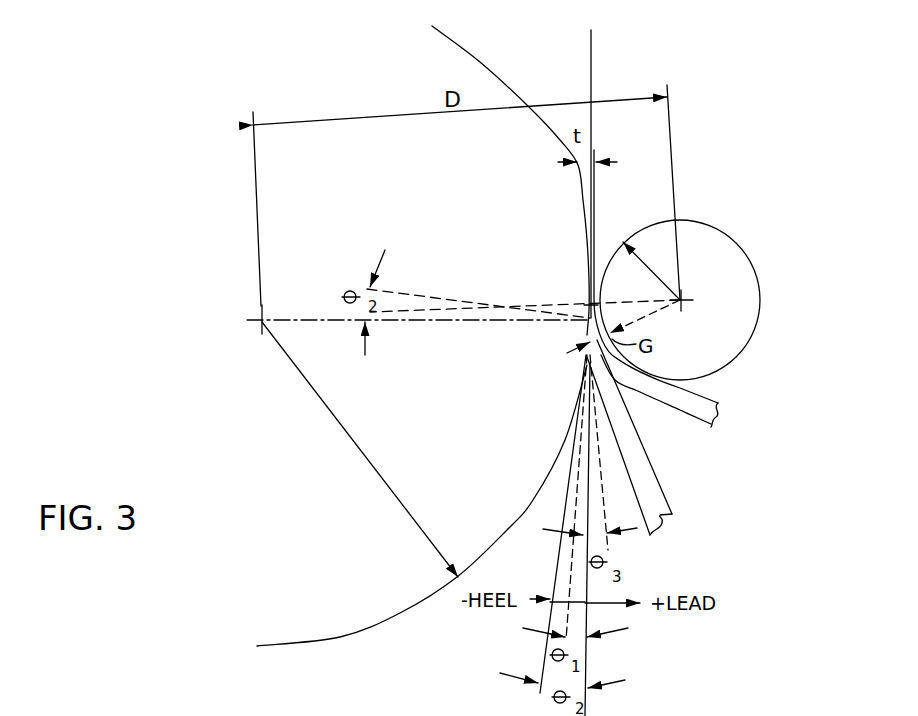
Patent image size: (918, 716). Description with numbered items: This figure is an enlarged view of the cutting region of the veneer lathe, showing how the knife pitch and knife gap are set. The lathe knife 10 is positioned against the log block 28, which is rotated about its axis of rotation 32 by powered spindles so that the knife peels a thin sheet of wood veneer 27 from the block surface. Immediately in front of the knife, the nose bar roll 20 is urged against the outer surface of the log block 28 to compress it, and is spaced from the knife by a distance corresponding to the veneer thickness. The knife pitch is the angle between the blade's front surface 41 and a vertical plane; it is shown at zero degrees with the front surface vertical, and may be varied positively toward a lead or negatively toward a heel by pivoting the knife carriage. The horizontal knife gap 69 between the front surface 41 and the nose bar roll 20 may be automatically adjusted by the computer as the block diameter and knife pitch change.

The lathe knife 10 is at (637, 432).
The nose bar roll 20 is at (740, 238).
The wood veneer 27 is at (720, 402).
The log block 28 is at (449, 32).
The axis of rotation 32 is at (262, 325).
The front surface 41 is at (586, 373).
The horizontal knife gap 69 is at (597, 152).